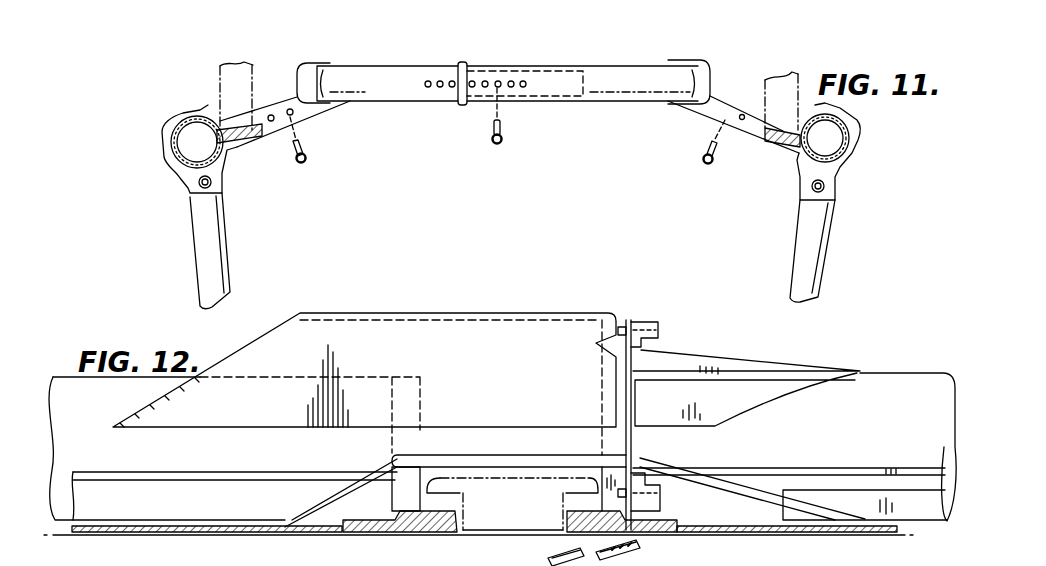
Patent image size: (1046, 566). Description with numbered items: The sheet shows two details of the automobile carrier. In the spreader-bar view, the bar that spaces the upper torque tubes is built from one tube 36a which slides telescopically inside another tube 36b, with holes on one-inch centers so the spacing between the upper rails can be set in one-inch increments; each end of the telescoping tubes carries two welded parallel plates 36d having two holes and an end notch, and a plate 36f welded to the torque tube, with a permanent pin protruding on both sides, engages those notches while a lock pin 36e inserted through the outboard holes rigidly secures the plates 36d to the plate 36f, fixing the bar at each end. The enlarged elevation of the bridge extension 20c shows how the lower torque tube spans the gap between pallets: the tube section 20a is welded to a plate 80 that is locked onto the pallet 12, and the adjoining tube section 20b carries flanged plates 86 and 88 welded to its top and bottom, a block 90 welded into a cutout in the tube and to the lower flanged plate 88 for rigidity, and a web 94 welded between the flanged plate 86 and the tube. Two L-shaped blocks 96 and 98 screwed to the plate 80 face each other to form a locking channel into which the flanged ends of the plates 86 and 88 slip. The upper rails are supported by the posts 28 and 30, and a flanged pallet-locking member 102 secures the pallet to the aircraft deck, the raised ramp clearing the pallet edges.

In FIG. 12, the pallet 12 is at (125, 535).
In FIG. 12, the tube section 20a is at (56, 377).
In FIG. 12, the tube section 20b is at (905, 352).
In FIG. 12, the bridge extension 20c is at (455, 306).
In FIG. 11, the post 28 is at (221, 252).
In FIG. 11, the post 30 is at (798, 233).
In FIG. 11, the tube 36a is at (418, 54).
In FIG. 11, the tube 36b is at (645, 66).
In FIG. 11, the parallel plates 36d is at (301, 65).
In FIG. 11, the lock pin 36e is at (307, 152).
In FIG. 11, the plate 36f is at (262, 138).
In FIG. 12, the plate 80 is at (509, 565).
In FIG. 12, the flanged plate 86 is at (723, 370).
In FIG. 12, the flanged plate 88 is at (680, 466).
In FIG. 12, the block 90 is at (925, 517).
In FIG. 12, the web 94 is at (767, 385).
In FIG. 12, the L-shaped block 96 is at (648, 321).
In FIG. 12, the L-shaped block 98 is at (661, 509).
In FIG. 12, the flanged pallet-locking member 102 is at (476, 522).